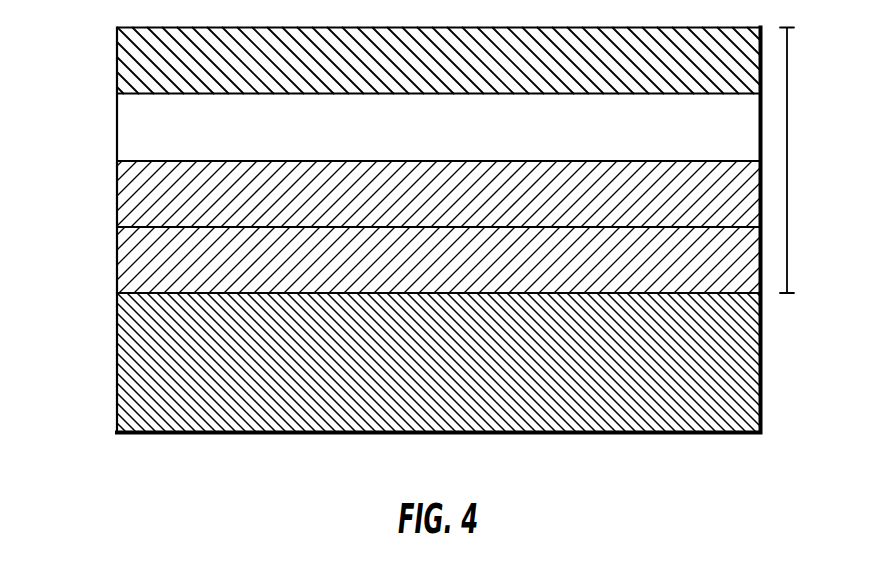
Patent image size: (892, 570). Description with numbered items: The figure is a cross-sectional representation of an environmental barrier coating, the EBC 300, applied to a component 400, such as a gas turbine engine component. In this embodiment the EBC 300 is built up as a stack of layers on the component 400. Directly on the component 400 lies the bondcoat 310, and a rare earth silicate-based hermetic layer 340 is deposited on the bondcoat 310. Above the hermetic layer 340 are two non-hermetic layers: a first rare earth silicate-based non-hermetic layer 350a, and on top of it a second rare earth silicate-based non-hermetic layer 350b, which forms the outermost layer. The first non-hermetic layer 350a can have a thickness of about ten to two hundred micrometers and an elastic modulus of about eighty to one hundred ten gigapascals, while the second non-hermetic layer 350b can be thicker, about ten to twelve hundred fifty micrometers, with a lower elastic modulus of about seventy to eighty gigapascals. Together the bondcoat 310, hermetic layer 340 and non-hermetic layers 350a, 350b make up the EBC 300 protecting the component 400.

The EBC 300 is at (788, 158).
The second rare earth silicate-based non-hermetic layer 350b is at (117, 65).
The first rare earth silicate-based non-hermetic layer 350a is at (117, 135).
The rare earth silicate-based hermetic layer 340 is at (117, 193).
The bondcoat 310 is at (117, 267).
The component 400 is at (117, 358).